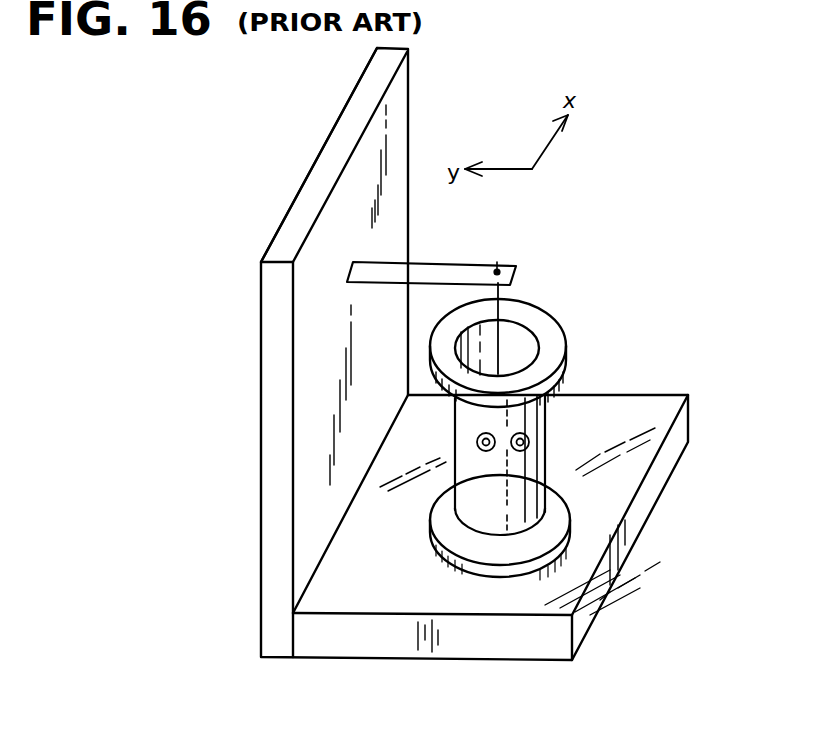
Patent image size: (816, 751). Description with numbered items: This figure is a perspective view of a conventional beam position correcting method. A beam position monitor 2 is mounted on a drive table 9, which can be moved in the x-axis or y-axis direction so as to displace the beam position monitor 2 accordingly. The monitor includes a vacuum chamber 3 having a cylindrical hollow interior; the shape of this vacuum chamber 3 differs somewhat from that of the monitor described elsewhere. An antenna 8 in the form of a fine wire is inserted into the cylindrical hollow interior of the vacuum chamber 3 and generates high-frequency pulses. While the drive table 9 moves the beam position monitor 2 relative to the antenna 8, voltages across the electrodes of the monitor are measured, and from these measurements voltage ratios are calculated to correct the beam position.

The beam position monitor 2 is at (552, 435).
The vacuum chamber 3 is at (550, 353).
The antenna 8 is at (500, 310).
The drive table 9 is at (615, 495).